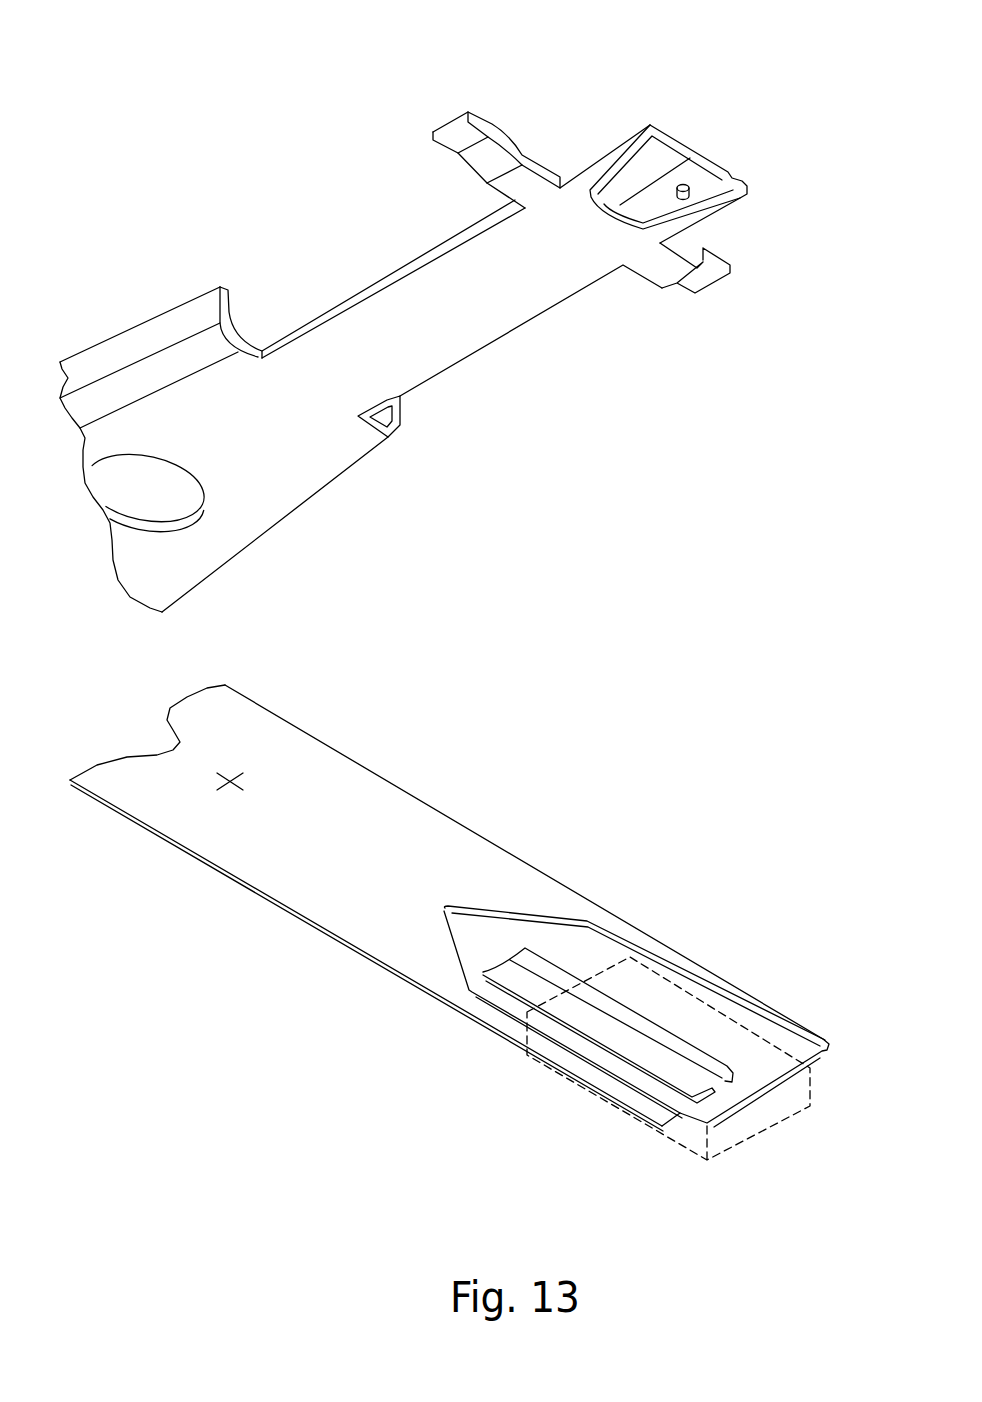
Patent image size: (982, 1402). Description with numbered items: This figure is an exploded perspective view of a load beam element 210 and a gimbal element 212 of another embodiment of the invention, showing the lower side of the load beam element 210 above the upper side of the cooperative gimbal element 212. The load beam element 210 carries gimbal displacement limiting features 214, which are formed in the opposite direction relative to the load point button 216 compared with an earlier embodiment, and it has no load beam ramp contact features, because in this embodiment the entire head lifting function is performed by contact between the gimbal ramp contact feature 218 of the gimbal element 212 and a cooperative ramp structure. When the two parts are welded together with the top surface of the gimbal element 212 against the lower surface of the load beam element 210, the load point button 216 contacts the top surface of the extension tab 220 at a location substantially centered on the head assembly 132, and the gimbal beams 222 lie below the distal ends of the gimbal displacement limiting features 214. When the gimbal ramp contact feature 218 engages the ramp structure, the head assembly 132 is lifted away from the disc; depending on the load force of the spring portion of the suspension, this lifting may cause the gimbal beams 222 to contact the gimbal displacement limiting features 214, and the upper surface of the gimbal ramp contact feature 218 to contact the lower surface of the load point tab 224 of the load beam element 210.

The head assembly 132 is at (750, 1118).
The load beam element 210 is at (333, 218).
The gimbal element 212 is at (652, 780).
The gimbal displacement limiting features 214 is at (462, 138).
The load point button 216 is at (685, 186).
The gimbal ramp contact feature 218 is at (543, 980).
The extension tab 220 is at (647, 1043).
The gimbal beams 222 is at (666, 957).
The load point tab 224 is at (470, 315).